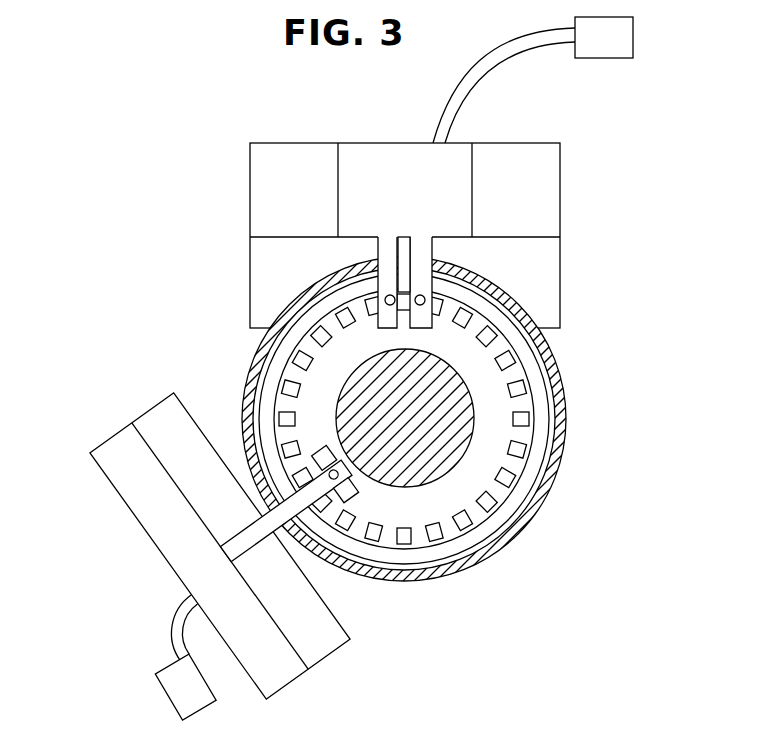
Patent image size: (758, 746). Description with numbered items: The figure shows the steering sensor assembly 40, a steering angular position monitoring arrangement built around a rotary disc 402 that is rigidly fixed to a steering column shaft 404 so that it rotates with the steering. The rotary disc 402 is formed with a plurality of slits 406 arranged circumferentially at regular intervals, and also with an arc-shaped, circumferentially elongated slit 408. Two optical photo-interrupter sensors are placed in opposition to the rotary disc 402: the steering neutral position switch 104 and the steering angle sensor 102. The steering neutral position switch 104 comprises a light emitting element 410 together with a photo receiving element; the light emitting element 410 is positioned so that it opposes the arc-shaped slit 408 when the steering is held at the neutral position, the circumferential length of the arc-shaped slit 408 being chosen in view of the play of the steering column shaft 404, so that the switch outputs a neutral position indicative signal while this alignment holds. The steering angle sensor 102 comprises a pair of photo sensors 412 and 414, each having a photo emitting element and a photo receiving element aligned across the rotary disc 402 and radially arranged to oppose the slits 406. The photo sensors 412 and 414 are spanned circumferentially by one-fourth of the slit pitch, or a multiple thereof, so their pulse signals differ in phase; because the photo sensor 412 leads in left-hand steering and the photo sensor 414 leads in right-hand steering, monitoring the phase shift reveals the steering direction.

The steering angle sensor 102 is at (572, 205).
The steering neutral position switch 104 is at (178, 592).
The steering sensor assembly 40 is at (379, 420).
The rotary disc 402 is at (453, 419).
The steering column shaft 404 is at (453, 462).
The slits 406 is at (524, 388).
The arc-shaped slit 408 is at (315, 450).
The light emitting element 410 is at (329, 484).
The photo sensor 412 is at (388, 305).
The photo sensor 414 is at (421, 305).